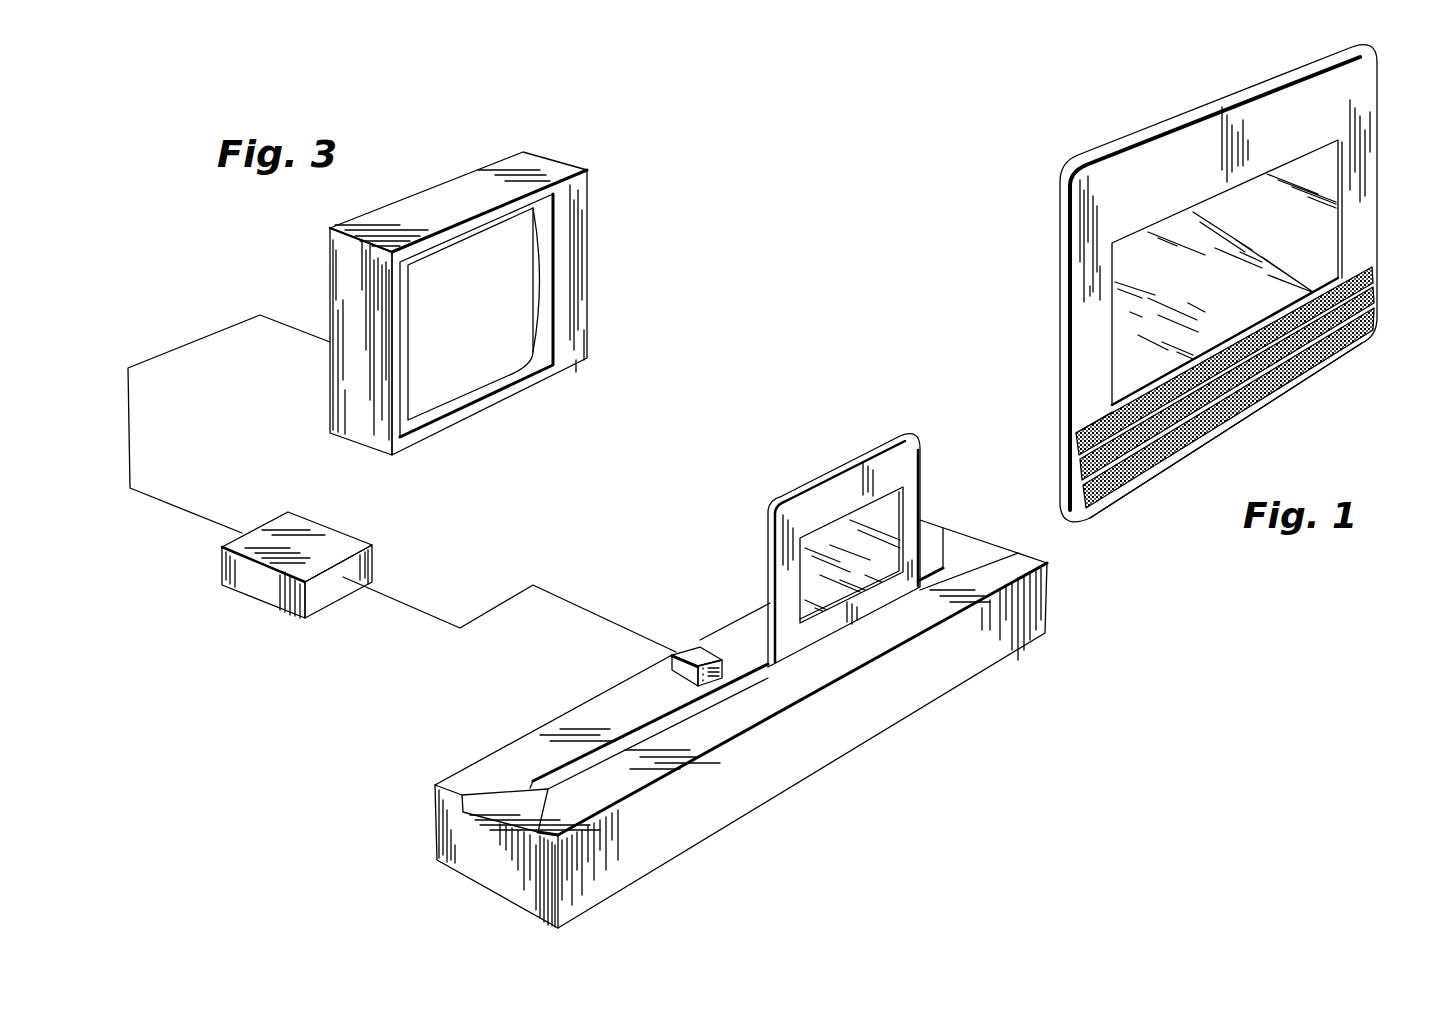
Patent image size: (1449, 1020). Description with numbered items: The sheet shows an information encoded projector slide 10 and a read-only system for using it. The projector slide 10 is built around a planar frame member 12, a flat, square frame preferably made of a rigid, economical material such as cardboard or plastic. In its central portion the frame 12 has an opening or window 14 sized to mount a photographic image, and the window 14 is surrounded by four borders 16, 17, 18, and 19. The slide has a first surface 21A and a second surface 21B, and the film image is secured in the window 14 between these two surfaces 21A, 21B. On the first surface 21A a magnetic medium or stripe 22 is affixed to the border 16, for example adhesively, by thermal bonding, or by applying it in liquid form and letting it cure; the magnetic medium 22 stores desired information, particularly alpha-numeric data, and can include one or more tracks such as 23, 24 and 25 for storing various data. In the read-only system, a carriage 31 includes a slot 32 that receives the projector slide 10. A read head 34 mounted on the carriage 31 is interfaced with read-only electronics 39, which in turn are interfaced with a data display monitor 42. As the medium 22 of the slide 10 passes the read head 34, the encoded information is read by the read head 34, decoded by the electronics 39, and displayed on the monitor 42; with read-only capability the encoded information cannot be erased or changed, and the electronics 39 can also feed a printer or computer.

In FIG. 1, the information projector slide 10 is at (1208, 267).
In FIG. 3, the information projector slide 10 is at (866, 440).
In FIG. 1, the planar frame member 12 is at (1352, 66).
In FIG. 1, the window 14 is at (1300, 242).
In FIG. 1, the border 16 is at (1288, 398).
In FIG. 1, the border 17 is at (1083, 318).
In FIG. 1, the border 18 is at (1180, 152).
In FIG. 1, the border 19 is at (1372, 153).
In FIG. 1, the first surface 21A is at (1086, 204).
In FIG. 1, the second surface 21B is at (1103, 140).
In FIG. 1, the magnetic medium 22 is at (1088, 427).
In FIG. 1, the track 23 is at (1376, 278).
In FIG. 1, the track 24 is at (1376, 303).
In FIG. 1, the track 25 is at (1375, 322).
In FIG. 3, the carriage 31 is at (741, 724).
In FIG. 3, the slot 32 is at (625, 742).
In FIG. 3, the read head 34 is at (692, 650).
In FIG. 3, the read-only electronics 39 is at (333, 529).
In FIG. 3, the data display monitor 42 is at (588, 172).